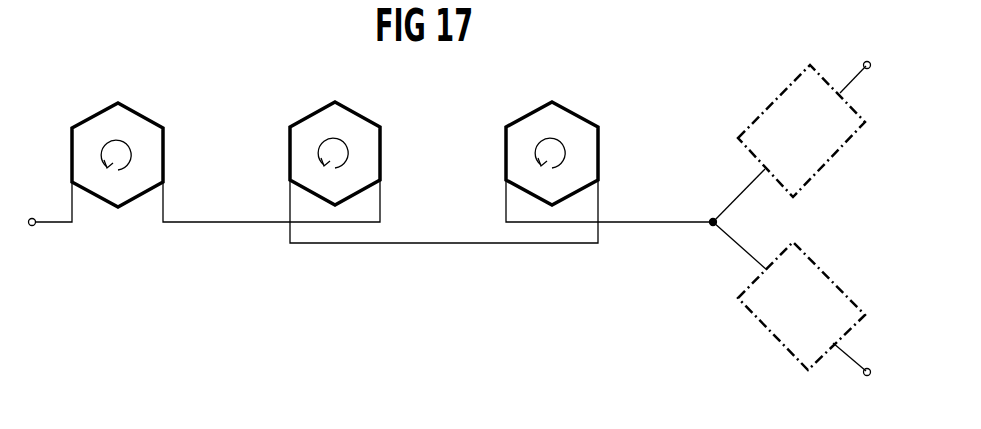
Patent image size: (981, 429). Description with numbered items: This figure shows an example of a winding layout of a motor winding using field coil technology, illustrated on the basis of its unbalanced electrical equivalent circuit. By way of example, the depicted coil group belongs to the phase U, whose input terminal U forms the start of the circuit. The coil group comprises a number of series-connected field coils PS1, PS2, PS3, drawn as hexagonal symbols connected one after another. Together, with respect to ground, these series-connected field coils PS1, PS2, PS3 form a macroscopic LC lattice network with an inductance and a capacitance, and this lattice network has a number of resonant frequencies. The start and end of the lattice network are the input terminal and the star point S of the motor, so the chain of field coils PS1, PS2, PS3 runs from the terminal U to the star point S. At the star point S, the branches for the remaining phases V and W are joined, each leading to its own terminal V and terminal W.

The field coil PS1 is at (100, 120).
The field coil PS2 is at (317, 118).
The field coil PS3 is at (535, 117).
The star point S is at (713, 216).
The phase U is at (47, 204).
The phase V is at (865, 74).
The phase W is at (865, 365).